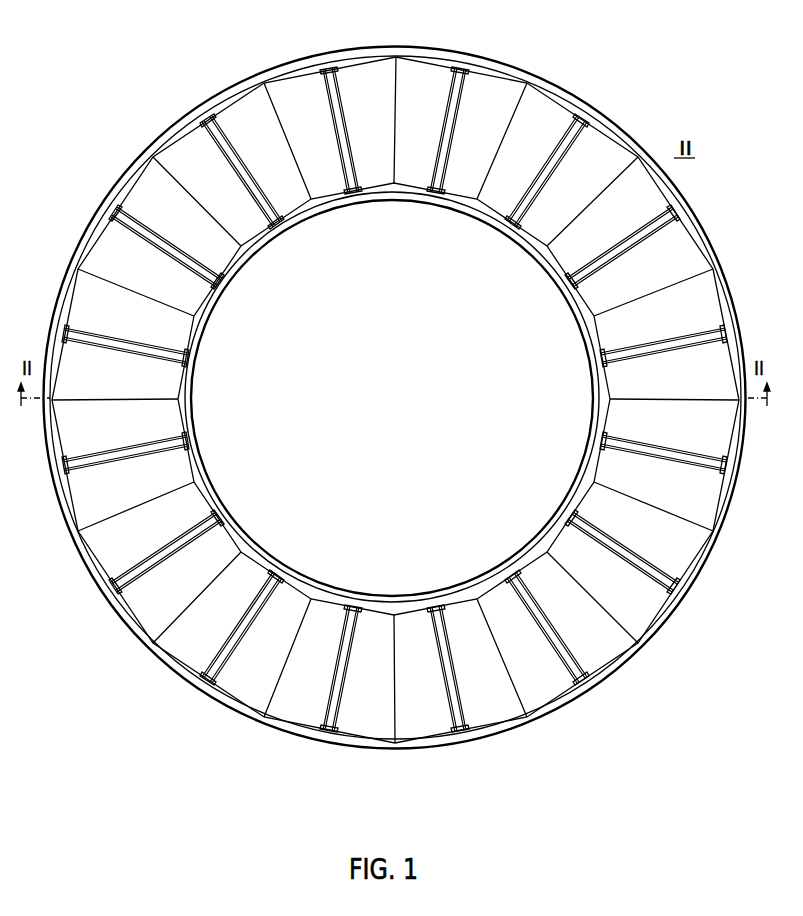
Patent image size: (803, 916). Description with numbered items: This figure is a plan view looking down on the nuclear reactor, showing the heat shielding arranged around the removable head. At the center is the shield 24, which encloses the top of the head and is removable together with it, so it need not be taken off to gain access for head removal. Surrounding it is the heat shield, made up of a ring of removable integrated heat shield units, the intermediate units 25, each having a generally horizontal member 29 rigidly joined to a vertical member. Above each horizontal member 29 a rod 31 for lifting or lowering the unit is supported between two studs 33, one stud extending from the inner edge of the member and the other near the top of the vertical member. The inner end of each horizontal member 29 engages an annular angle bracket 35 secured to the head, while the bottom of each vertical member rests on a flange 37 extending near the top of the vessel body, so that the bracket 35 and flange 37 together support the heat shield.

The shield 24 is at (253, 284).
The intermediate unit 25 is at (715, 532).
The horizontal member 29 is at (478, 692).
The rod 31 is at (615, 257).
The stud 33 is at (327, 65).
The annular angle bracket 35 is at (472, 211).
The flange 37 is at (468, 735).